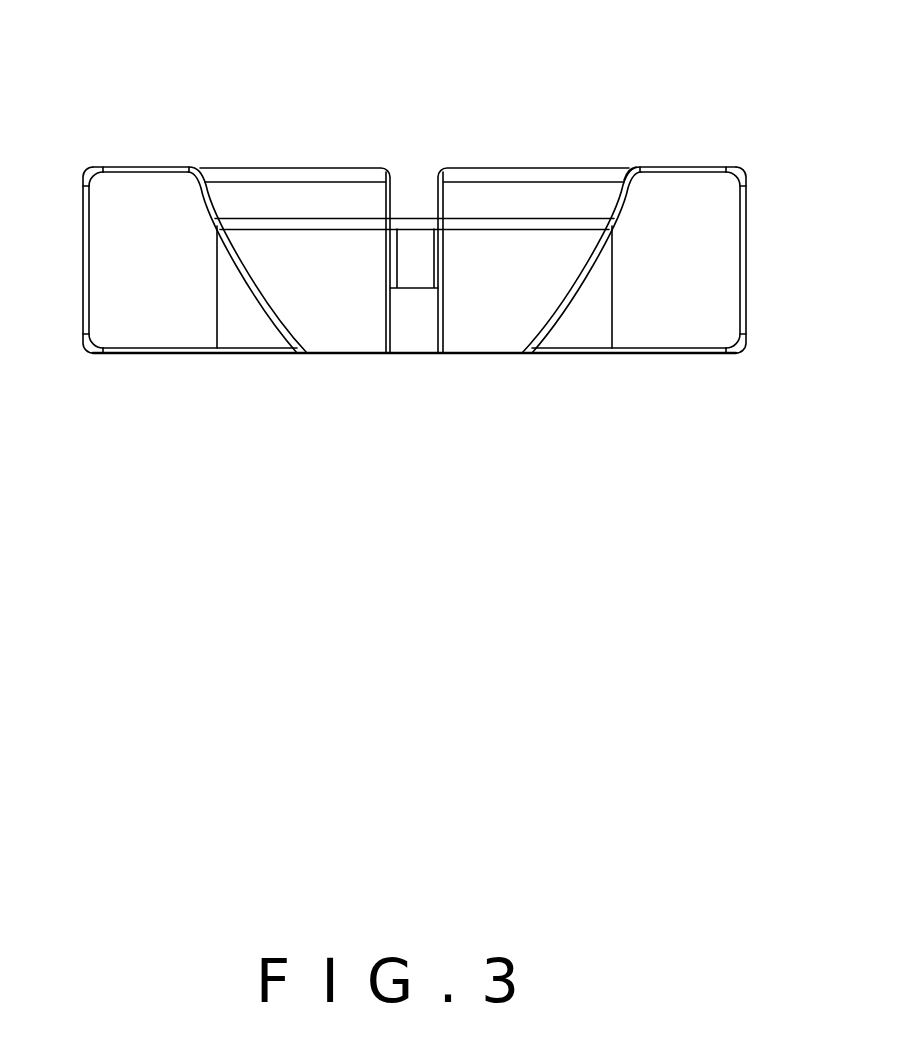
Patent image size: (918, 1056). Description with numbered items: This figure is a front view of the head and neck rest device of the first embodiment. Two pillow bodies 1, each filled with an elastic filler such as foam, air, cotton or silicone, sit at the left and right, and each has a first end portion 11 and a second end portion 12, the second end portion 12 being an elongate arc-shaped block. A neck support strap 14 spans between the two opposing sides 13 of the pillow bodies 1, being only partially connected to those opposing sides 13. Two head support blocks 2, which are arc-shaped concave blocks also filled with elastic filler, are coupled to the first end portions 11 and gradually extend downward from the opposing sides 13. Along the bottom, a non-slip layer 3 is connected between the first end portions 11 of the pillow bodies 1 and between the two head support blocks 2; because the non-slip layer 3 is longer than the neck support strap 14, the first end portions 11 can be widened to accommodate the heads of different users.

The pillow body 1 is at (83, 257).
The first end portion 11 is at (140, 187).
The second end portion 12 is at (252, 168).
The opposing side 13 is at (617, 195).
The neck support strap 14 is at (325, 235).
The head support block 2 is at (250, 332).
The non-slip layer 3 is at (482, 353).